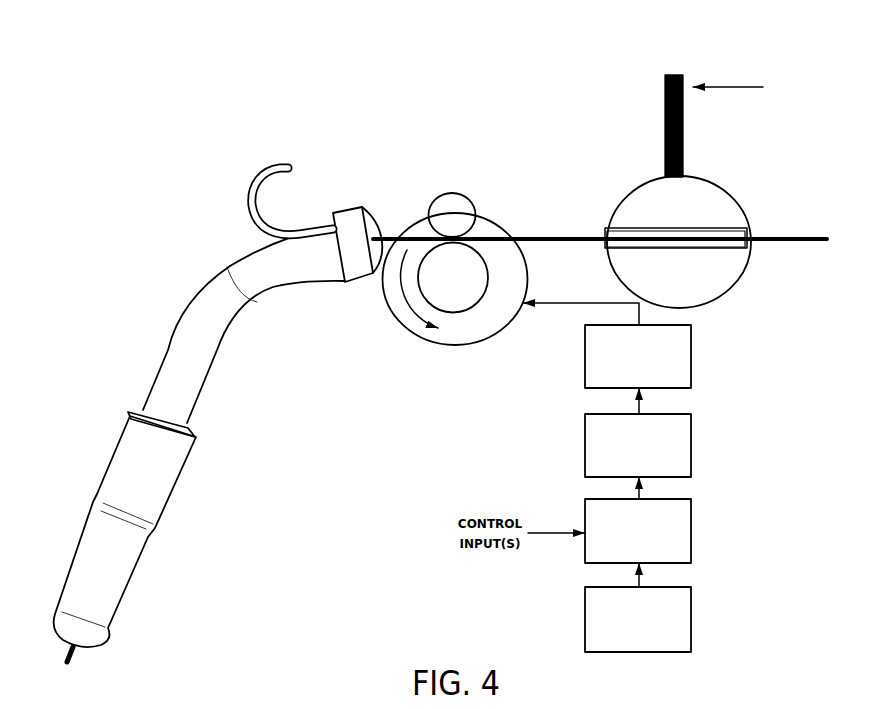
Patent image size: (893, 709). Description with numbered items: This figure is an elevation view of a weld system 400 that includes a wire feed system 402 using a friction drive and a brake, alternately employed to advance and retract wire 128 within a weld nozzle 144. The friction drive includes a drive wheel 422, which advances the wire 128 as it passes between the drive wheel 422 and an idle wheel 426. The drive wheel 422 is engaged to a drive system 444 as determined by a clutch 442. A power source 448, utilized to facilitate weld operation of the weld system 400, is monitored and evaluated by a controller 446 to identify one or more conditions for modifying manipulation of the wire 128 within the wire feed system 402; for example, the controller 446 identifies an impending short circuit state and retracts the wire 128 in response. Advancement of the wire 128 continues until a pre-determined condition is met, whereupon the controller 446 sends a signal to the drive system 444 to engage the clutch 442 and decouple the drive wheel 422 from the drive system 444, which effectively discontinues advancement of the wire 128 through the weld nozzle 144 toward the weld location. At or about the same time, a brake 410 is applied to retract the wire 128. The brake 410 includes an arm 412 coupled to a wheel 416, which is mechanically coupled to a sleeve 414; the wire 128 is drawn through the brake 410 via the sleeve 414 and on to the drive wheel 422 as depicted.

The wire 128 is at (798, 233).
The weld nozzle 144 is at (98, 422).
The weld system 400 is at (347, 125).
The wire feed system 402 is at (511, 251).
The brake 410 is at (714, 164).
The arm 412 is at (683, 128).
The sleeve 414 is at (733, 228).
The wheel 416 is at (713, 205).
The drive wheel 422 is at (467, 310).
The idle wheel 426 is at (447, 210).
The clutch 442 is at (692, 375).
The drive system 444 is at (692, 465).
The controller 446 is at (692, 547).
The power source 448 is at (692, 625).